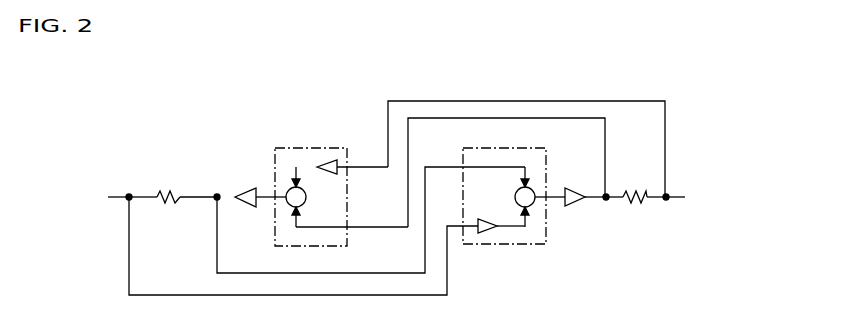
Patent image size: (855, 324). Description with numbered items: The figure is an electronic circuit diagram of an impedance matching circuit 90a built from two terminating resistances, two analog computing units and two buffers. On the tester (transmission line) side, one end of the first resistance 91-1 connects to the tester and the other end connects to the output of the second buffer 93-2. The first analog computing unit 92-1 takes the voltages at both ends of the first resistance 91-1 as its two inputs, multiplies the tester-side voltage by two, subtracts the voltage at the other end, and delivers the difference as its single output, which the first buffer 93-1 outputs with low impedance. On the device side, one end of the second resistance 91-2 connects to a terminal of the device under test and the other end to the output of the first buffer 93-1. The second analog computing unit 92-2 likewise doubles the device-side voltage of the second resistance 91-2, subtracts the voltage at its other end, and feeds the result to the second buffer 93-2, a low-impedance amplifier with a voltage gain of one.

The impedance matching circuit 90a is at (210, 101).
The first resistance Rtp 91-1 is at (164, 203).
The second resistance Rts 91-2 is at (635, 203).
The first analog computing unit 92-1 is at (497, 246).
The second analog computing unit 92-2 is at (315, 146).
The first buffer 93-1 is at (574, 205).
The second buffer 93-2 is at (245, 187).